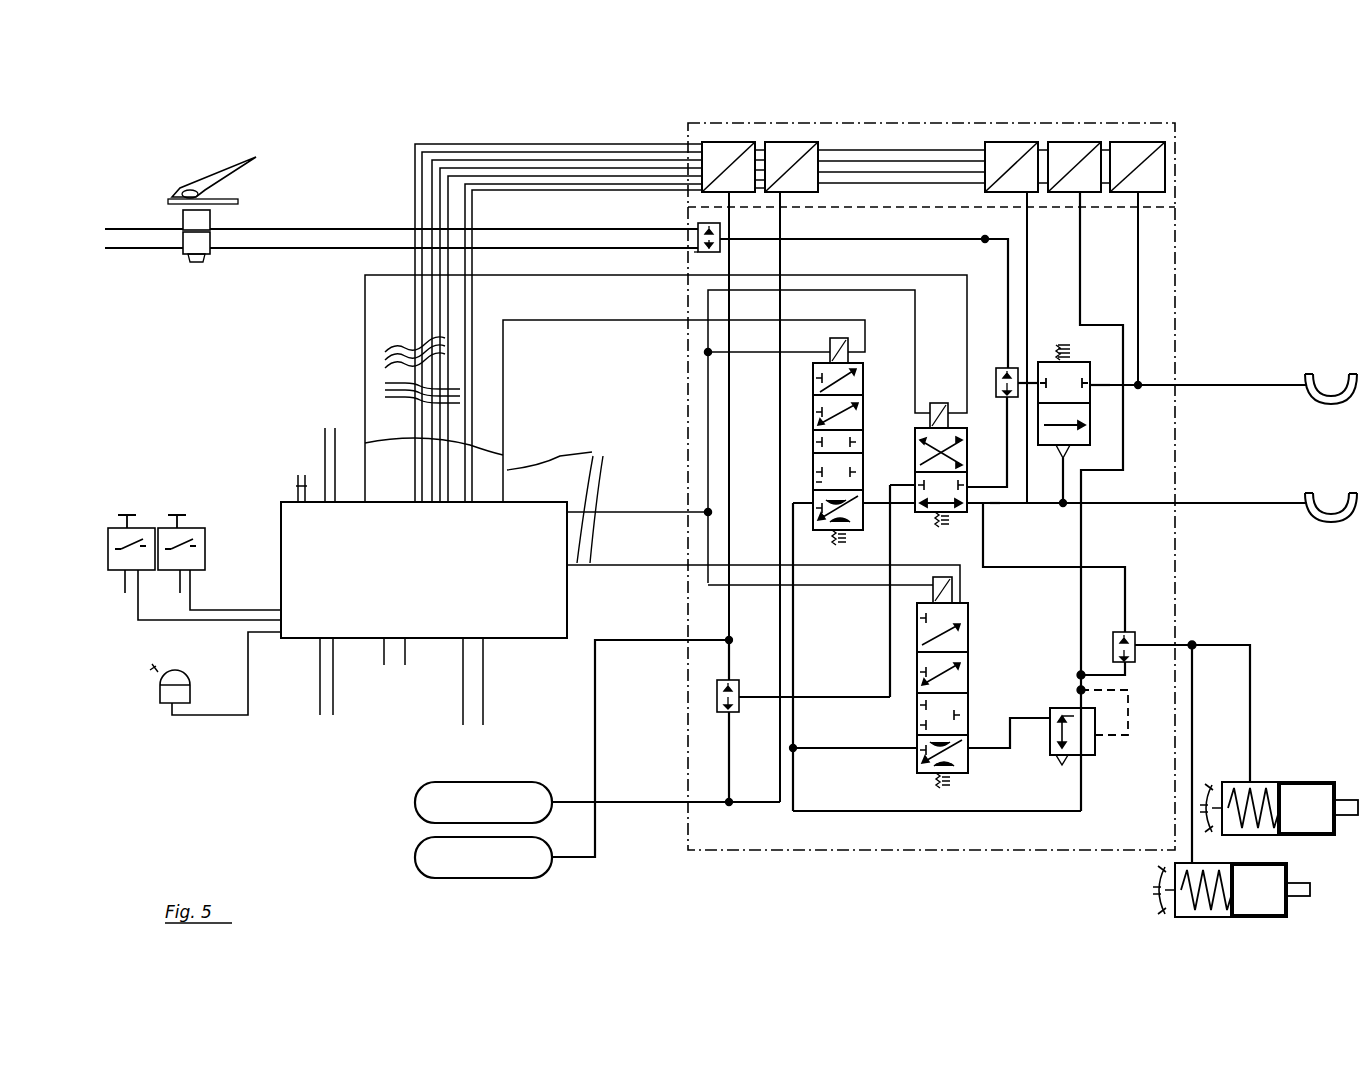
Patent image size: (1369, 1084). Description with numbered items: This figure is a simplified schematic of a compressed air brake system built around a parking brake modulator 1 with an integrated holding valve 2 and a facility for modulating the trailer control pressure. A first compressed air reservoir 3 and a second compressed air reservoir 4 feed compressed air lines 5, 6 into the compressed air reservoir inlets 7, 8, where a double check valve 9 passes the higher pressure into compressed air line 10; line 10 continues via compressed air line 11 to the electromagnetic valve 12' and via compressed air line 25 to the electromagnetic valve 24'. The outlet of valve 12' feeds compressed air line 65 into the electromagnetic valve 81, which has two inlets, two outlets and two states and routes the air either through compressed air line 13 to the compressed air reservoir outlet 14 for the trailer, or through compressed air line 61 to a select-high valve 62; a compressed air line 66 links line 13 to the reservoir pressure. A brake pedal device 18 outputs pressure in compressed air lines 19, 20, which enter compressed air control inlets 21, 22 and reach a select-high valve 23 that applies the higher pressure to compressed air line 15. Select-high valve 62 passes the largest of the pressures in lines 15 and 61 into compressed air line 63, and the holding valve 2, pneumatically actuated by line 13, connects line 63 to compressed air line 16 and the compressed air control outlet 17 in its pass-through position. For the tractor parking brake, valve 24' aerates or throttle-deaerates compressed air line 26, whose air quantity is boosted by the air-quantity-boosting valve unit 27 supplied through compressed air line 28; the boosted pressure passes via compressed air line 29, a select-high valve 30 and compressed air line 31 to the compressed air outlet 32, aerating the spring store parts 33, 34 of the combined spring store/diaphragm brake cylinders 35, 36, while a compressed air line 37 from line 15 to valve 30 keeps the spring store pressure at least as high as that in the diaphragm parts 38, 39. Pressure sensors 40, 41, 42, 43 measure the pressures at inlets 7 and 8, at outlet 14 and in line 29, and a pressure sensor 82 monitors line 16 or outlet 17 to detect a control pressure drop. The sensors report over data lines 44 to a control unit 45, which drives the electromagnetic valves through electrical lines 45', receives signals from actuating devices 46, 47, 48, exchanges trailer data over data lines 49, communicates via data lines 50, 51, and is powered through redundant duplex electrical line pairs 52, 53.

The parking brake modulator 1 is at (1177, 440).
The holding valve 2 is at (1092, 420).
The first compressed air reservoir 3 is at (415, 866).
The second compressed air reservoir 4 is at (410, 804).
The compressed air line 5 is at (729, 672).
The compressed air line 6 is at (729, 768).
The compressed air reservoir inlet 7 is at (682, 638).
The compressed air reservoir inlet 8 is at (683, 806).
The double check valve 9 is at (739, 706).
The compressed air line 10 is at (746, 696).
The compressed air line 11 is at (794, 620).
The electromagnetic valve 12' is at (857, 548).
The compressed air line 13 is at (998, 503).
The compressed air reservoir outlet 14 is at (1176, 505).
The compressed air line 15 is at (916, 238).
The compressed air line 16 is at (1099, 386).
The compressed air control outlet 17 is at (1178, 384).
The brake pedal device 18 is at (205, 185).
The compressed air line 19 is at (272, 229).
The compressed air line 20 is at (268, 253).
The compressed air control inlet 21 is at (698, 224).
The compressed air control inlet 22 is at (698, 252).
The select-high valve 23 is at (726, 240).
The electromagnetic valve 24' is at (967, 682).
The compressed air line 25 is at (794, 748).
The compressed air line 26 is at (1024, 718).
The air-quantity-boosting valve unit 27 is at (1096, 752).
The compressed air line 28 is at (1015, 812).
The compressed air line 29 is at (1076, 688).
The select-high valve 30 is at (1127, 632).
The compressed air line 31 is at (1153, 650).
The compressed air outlet 32 is at (1180, 645).
The spring store part 33 is at (1262, 784).
The spring store part 34 is at (1200, 870).
The combined spring store/diaphragm brake cylinder 35 is at (1330, 840).
The combined spring store/diaphragm brake cylinder 36 is at (1287, 910).
The compressed air line 37 is at (1013, 568).
The diaphragm part 38 is at (1312, 786).
The diaphragm part 39 is at (1252, 873).
The pressure sensor 40 is at (723, 142).
The pressure sensor 41 is at (802, 142).
The pressure sensor 42 is at (1009, 142).
The pressure sensor 43 is at (1079, 142).
The data lines 44 is at (535, 323).
The control unit 45 is at (424, 570).
The electrical lines 45' is at (491, 498).
The actuating device 46 is at (108, 554).
The actuating device 47 is at (205, 565).
The actuating device 48 is at (188, 670).
The data lines 49 is at (325, 441).
The data lines 50 is at (384, 660).
The data lines 51 is at (463, 690).
The duplex electrical line pair 52 is at (334, 700).
The duplex electrical line pair 53 is at (298, 486).
The compressed air line 61 is at (1000, 444).
The select-high valve 62 is at (1000, 368).
The compressed air line 63 is at (1038, 370).
The compressed air line 65 is at (884, 484).
The compressed air line 66 is at (829, 696).
The electromagnetic valve 81 is at (928, 515).
The pressure sensor 82 is at (1137, 142).